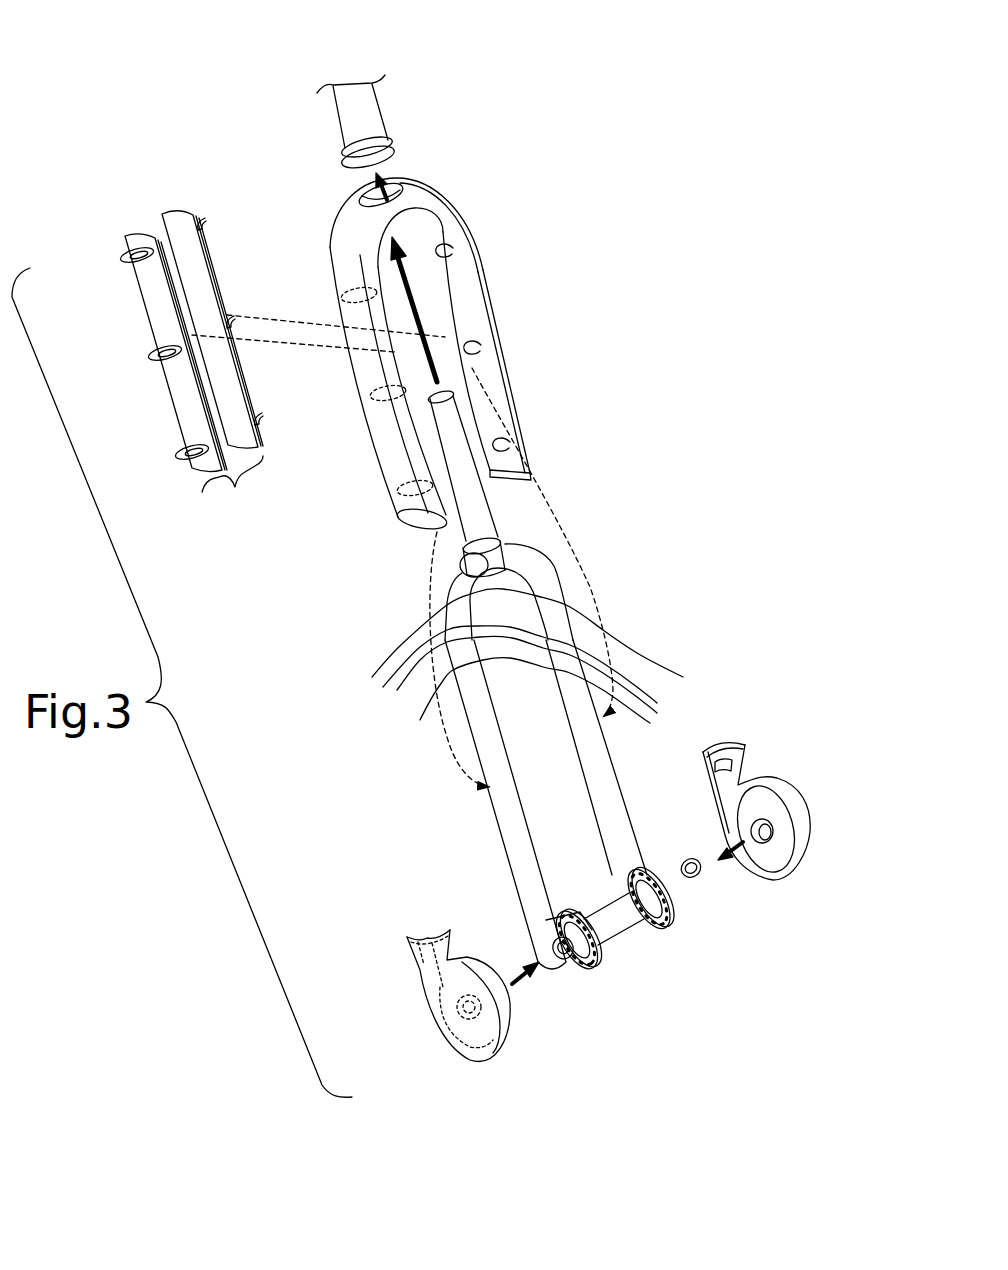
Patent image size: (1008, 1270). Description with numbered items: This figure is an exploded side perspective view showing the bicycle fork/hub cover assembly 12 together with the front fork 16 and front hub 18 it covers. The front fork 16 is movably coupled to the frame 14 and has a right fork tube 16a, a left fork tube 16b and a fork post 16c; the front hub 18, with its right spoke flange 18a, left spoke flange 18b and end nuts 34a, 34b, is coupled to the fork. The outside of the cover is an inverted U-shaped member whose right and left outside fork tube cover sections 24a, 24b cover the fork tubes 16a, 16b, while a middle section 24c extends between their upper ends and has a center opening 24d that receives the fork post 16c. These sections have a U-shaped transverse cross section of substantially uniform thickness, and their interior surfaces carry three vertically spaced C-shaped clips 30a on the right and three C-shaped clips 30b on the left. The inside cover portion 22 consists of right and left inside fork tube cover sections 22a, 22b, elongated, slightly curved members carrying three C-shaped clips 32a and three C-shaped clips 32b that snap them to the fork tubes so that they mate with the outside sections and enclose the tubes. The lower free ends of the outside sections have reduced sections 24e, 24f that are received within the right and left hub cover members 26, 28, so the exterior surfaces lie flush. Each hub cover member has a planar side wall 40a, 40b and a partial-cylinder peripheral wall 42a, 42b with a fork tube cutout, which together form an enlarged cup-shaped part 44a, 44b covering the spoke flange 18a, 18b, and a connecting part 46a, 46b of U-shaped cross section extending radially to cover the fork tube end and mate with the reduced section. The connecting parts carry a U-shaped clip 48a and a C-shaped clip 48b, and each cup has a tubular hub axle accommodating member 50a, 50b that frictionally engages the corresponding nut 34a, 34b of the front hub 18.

The bicycle fork/hub cover assembly 12 is at (198, 140).
The frame 14 is at (376, 111).
The front fork 16 is at (550, 546).
The right fork tube 16a is at (610, 755).
The left fork tube 16b is at (497, 832).
The fork post 16c is at (482, 493).
The front hub 18 is at (630, 936).
The right spoke flange 18a is at (675, 912).
The left spoke flange 18b is at (597, 967).
The inside cover portion 22 is at (181, 340).
The right inside fork tube cover section 22a is at (207, 267).
The left inside fork tube cover section 22b is at (148, 320).
The right outside fork tube cover section 24a is at (484, 288).
The left outside fork tube cover section 24b is at (377, 440).
The middle section 24c is at (413, 178).
The center opening 24d is at (363, 190).
The reduced section 24e is at (531, 468).
The reduced section 24f is at (413, 527).
The right hub cover member 26 is at (766, 772).
The left hub cover member 28 is at (421, 1000).
The C-shaped clips 30a is at (449, 243).
The C-shaped clips 30b is at (343, 293).
The C-shaped clips 32a is at (200, 218).
The C-shaped clips 32b is at (120, 257).
The end nut 34a is at (702, 877).
The end nut 34b is at (565, 968).
The side wall 40a is at (747, 805).
The side wall 40b is at (493, 1030).
The peripheral wall 42a is at (722, 835).
The peripheral wall 42b is at (477, 960).
The right enlarged cup-shaped part 44a is at (777, 851).
The left enlarged cup-shaped part 44b is at (515, 1028).
The connecting part 46a is at (718, 775).
The connecting part 46b is at (428, 935).
The U-shaped clip 48a is at (710, 750).
The C-shaped clip 48b is at (408, 968).
The right hub axle accommodating member 50a is at (768, 818).
The left hub axle accommodating member 50b is at (445, 1038).